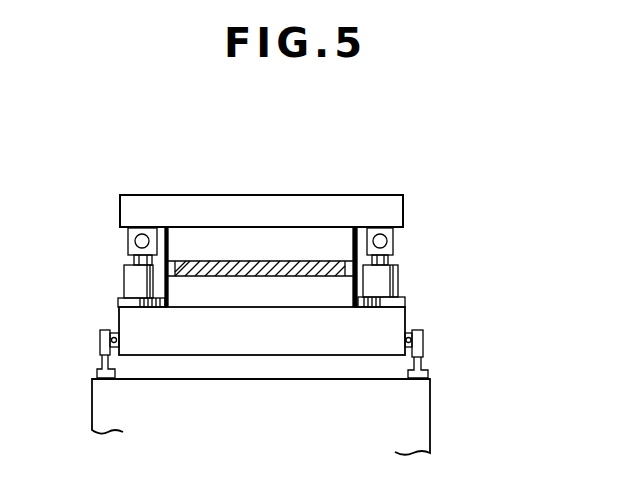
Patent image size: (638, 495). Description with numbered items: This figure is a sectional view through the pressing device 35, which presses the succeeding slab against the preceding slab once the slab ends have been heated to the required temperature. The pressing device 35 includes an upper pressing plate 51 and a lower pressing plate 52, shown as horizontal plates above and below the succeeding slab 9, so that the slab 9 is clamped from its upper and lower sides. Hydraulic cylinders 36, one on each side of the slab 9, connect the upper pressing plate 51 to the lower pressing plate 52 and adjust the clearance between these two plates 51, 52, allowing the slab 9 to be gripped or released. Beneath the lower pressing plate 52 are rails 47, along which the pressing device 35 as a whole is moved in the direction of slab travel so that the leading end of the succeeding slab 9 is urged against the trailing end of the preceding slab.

The pressing device 35 is at (378, 168).
The upper pressing plate 51 is at (282, 218).
The succeeding slab 9 is at (226, 261).
The hydraulic cylinders 36 is at (123, 293).
The lower pressing plate 52 is at (318, 343).
The rails 47 is at (423, 368).